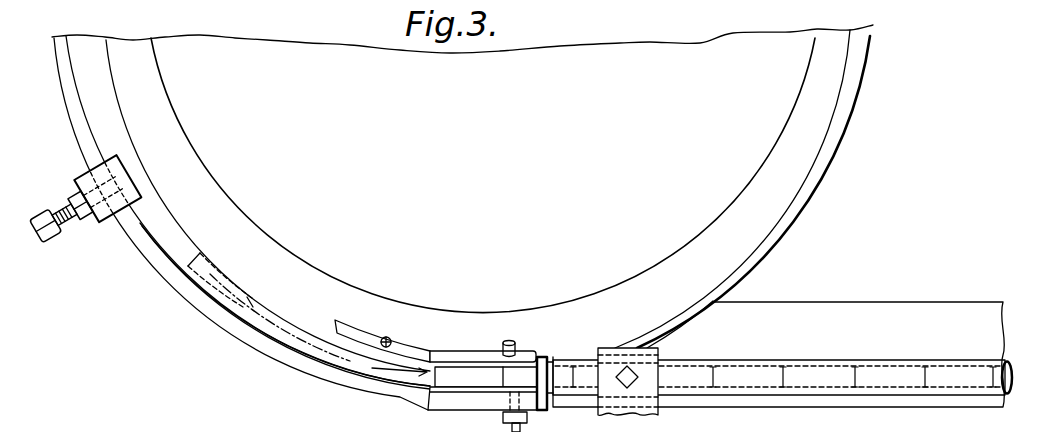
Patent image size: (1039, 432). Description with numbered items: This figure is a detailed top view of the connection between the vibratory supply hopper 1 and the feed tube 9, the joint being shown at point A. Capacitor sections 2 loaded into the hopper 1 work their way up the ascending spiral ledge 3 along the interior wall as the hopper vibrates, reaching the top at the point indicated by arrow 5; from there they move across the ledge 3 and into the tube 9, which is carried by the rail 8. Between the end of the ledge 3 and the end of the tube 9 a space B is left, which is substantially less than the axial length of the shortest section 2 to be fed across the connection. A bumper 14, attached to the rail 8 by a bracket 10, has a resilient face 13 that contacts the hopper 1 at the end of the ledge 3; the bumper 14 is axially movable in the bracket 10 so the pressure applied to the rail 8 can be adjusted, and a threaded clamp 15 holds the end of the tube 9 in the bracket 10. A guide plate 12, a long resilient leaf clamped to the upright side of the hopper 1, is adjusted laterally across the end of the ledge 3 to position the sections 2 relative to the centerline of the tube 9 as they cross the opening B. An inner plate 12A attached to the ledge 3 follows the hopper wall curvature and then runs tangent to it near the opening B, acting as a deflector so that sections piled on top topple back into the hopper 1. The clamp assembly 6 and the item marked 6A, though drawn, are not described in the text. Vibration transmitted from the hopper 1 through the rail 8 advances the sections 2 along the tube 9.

The vibratory supply hopper 1 is at (182, 290).
The capacitor sections 2 is at (227, 283).
The spiral ledge 3 is at (280, 303).
The arrow 5 is at (415, 357).
The clamp 6 is at (226, 216).
The clamp bolt 6A is at (973, 431).
The rail 8 is at (755, 402).
The feed tube 9 is at (817, 363).
The bracket 10 is at (662, 393).
The guide plate 12 is at (458, 388).
The inner plate 12A is at (440, 353).
The resilient face 13 is at (552, 360).
The bumper 14 is at (536, 412).
The threaded clamp 15 is at (633, 373).
The connection point A is at (544, 349).
The space B is at (552, 393).